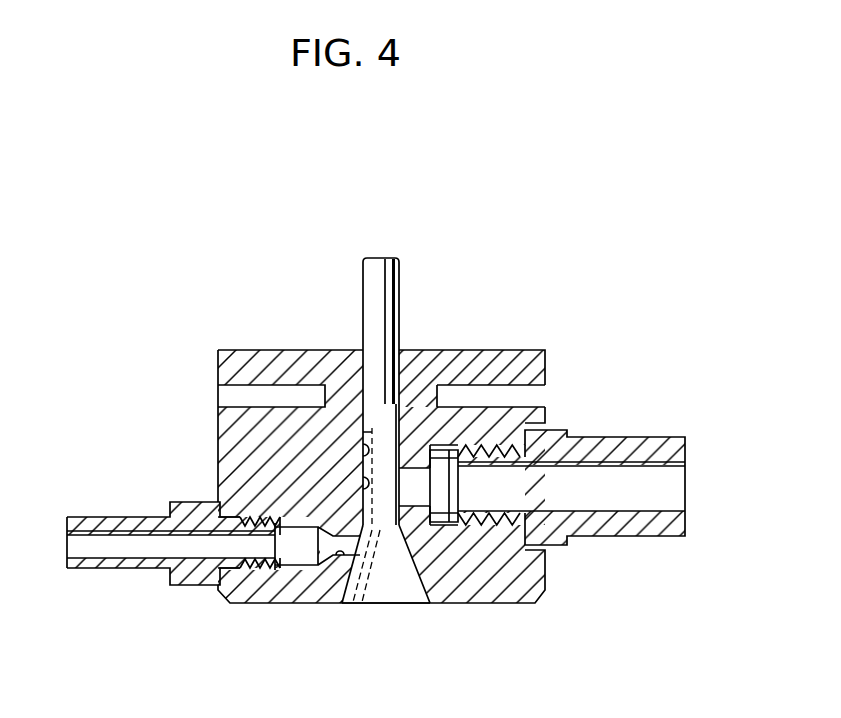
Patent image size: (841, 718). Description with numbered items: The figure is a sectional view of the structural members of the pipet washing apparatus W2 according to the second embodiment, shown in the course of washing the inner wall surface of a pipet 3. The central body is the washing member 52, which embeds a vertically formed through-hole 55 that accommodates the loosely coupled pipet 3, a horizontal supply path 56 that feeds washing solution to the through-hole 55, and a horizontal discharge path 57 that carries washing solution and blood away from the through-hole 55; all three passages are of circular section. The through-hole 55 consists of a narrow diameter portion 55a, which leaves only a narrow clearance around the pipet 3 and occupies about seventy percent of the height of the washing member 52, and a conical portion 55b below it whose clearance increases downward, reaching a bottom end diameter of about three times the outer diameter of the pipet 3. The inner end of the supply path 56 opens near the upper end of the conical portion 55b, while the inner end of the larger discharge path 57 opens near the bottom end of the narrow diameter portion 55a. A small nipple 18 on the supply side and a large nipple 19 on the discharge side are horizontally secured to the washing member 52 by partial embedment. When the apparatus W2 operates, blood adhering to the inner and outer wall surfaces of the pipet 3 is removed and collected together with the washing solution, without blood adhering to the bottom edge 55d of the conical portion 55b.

The pipet 3 is at (402, 290).
The washing member 52 is at (530, 350).
The large nipple 19 is at (668, 437).
The small nipple 18 is at (88, 569).
The through-hole 55 is at (363, 486).
The narrow diameter portion 55a is at (363, 446).
The conical portion 55b is at (413, 556).
The bottom edge 55d is at (432, 604).
The supply path 56 is at (342, 557).
The discharge path 57 is at (420, 492).
The pipet washing apparatus W2 is at (352, 187).